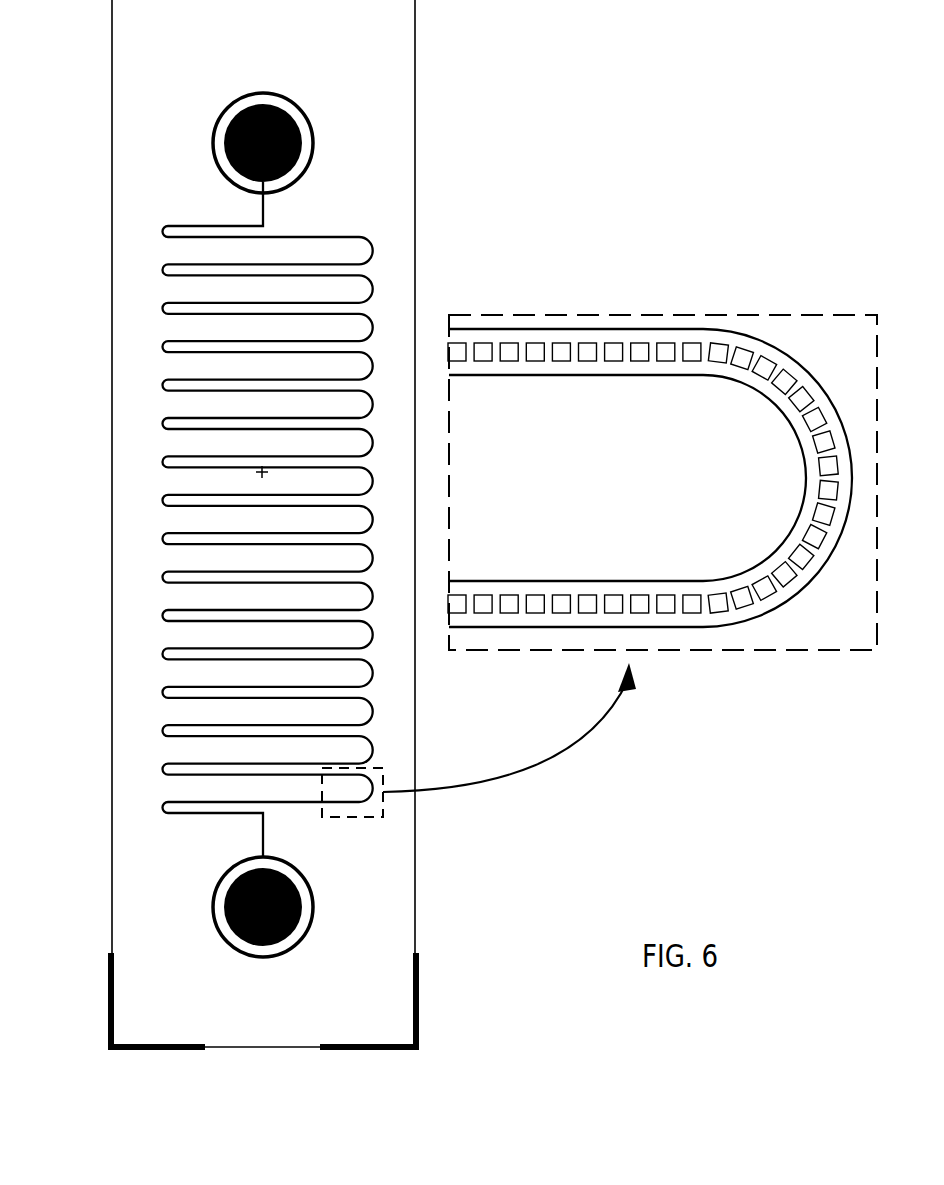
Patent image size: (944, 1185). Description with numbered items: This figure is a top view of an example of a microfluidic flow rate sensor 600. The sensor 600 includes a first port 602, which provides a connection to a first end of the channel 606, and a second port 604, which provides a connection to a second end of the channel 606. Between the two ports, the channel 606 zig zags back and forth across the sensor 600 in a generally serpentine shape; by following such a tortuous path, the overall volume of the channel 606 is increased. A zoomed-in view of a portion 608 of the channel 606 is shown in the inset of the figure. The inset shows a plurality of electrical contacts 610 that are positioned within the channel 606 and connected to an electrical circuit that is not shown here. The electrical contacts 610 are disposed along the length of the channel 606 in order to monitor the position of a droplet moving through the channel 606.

The microfluidic flow rate sensor 600 is at (423, 158).
The first port 602 is at (205, 139).
The second port 604 is at (202, 907).
The channel 606 is at (377, 287).
The portion of the channel 608 is at (353, 825).
The electrical contacts 610 is at (785, 393).